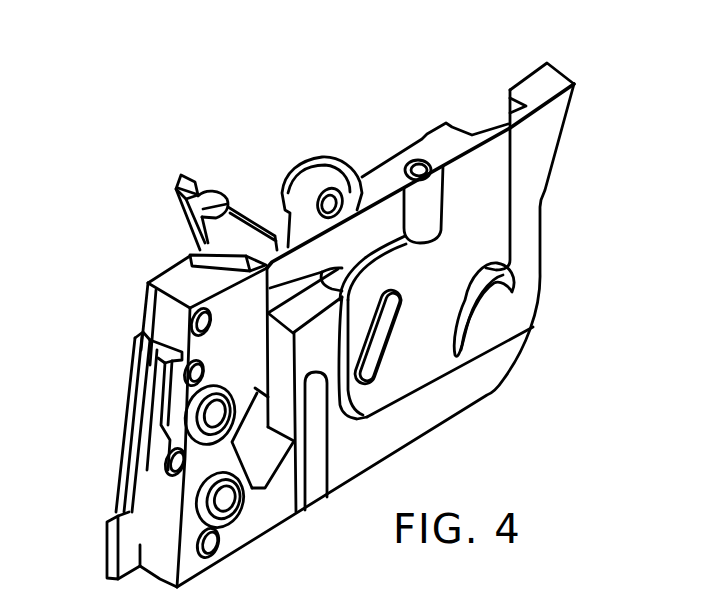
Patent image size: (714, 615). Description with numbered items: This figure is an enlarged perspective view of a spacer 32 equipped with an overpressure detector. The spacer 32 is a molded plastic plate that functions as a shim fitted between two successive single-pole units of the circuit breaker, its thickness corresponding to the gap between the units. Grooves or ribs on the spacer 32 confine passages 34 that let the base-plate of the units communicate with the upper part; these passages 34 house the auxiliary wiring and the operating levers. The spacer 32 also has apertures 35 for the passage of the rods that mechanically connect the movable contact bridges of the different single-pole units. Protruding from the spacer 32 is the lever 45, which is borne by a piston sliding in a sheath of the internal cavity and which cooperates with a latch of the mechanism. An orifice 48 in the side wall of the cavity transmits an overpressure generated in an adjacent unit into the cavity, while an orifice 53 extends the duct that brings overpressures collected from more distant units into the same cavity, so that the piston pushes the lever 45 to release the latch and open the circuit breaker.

The spacer plate 32 is at (523, 252).
The passages 34 is at (485, 112).
The apertures 35 is at (373, 340).
The lever 45 is at (238, 240).
The orifice 48 is at (220, 503).
The orifice 53 is at (213, 413).